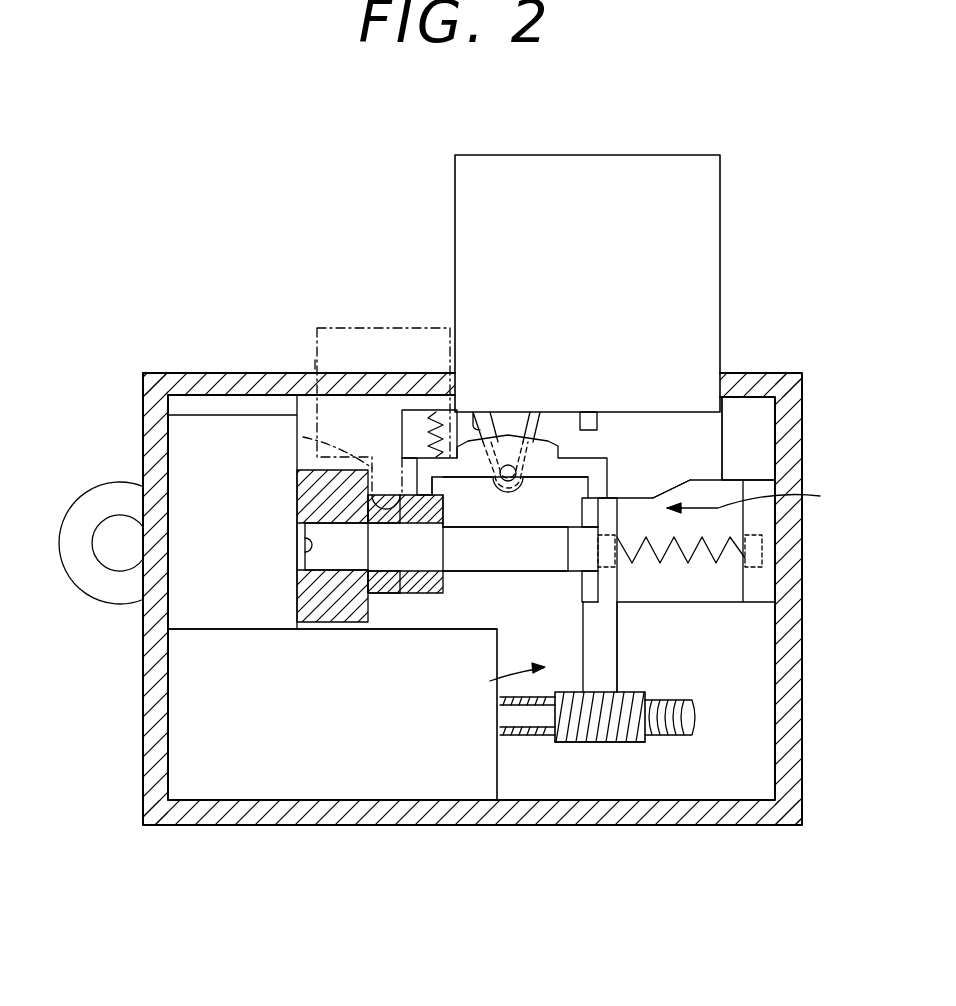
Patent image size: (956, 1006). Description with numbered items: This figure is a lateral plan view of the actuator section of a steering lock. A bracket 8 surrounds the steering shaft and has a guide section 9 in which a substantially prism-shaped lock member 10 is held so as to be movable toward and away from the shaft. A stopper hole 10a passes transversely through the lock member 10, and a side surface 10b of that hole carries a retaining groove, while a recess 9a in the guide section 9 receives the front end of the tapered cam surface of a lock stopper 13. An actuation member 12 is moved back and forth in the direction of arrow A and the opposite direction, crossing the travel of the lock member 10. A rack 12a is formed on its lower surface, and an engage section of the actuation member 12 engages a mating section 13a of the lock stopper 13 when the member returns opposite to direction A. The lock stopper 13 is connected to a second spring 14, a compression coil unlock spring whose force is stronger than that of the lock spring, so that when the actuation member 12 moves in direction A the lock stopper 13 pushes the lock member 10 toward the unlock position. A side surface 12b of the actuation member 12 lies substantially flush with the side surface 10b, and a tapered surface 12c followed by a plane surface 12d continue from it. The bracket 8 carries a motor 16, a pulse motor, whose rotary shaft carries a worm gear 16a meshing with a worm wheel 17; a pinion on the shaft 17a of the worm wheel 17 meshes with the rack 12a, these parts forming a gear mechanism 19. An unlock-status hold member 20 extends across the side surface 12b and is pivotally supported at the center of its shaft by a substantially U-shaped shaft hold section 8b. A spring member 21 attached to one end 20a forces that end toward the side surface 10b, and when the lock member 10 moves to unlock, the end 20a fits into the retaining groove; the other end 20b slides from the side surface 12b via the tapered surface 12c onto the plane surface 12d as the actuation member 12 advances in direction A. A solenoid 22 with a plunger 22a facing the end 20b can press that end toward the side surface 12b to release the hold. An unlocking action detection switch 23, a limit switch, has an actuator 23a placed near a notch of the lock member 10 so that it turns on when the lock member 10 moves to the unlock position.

The bracket 8 is at (143, 762).
The shaft hold section 8b is at (478, 432).
The guide section 9 is at (297, 490).
The recess 9a is at (297, 563).
The lock member 10 is at (420, 592).
The stopper hole 10a is at (398, 565).
The side surface 10b is at (441, 487).
The actuation member 12 is at (776, 458).
The rack 12a is at (583, 590).
The side surface 12b is at (606, 488).
The tapered surface 12c is at (667, 492).
The plane surface 12d is at (718, 480).
The lock stopper 13 is at (497, 572).
The mating section 13a is at (616, 585).
The second spring 14 is at (700, 558).
The motor 16 is at (330, 788).
The worm gear 16a is at (595, 744).
The worm wheel 17 is at (673, 742).
The shaft 17a is at (620, 667).
The gear mechanism 19 is at (490, 683).
The unlock-status hold member 20 is at (552, 440).
The one end 20a is at (400, 488).
The other end 20b is at (520, 549).
The spring member 21 is at (405, 470).
The solenoid 22 is at (727, 232).
The plunger 22a is at (597, 412).
The unlocking action detection switch 23 is at (317, 345).
The actuator 23a is at (303, 437).
The direction A is at (759, 494).